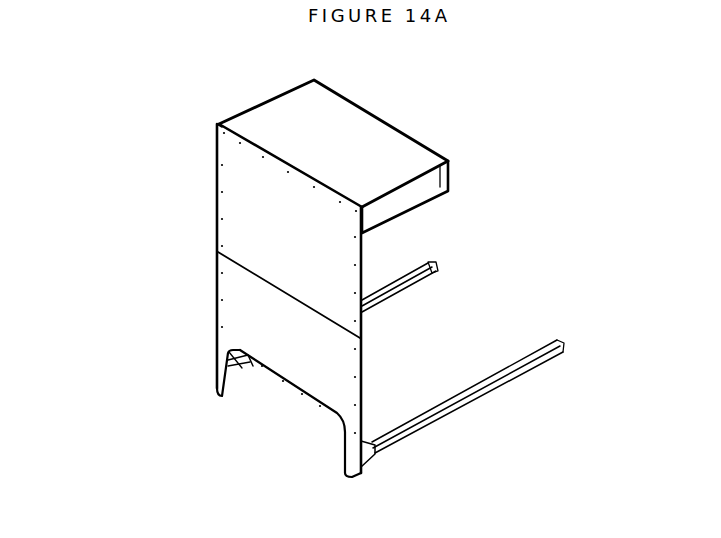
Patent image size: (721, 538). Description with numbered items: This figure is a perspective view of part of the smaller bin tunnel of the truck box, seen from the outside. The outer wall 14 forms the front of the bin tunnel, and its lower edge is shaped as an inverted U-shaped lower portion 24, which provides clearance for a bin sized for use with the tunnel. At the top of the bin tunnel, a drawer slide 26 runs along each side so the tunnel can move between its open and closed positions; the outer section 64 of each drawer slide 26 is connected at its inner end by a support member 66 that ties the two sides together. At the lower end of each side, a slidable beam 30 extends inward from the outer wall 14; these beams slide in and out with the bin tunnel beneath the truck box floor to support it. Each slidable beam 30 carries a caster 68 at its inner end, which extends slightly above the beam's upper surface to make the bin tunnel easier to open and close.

The outer wall 14 is at (253, 315).
The inverted U-shaped lower portion 24 is at (277, 387).
The drawer slide 26 is at (432, 182).
The slidable beam 30 is at (432, 264).
The outer section of the drawer slide 64 is at (403, 200).
The support member 66 is at (382, 118).
The caster 68 is at (415, 285).